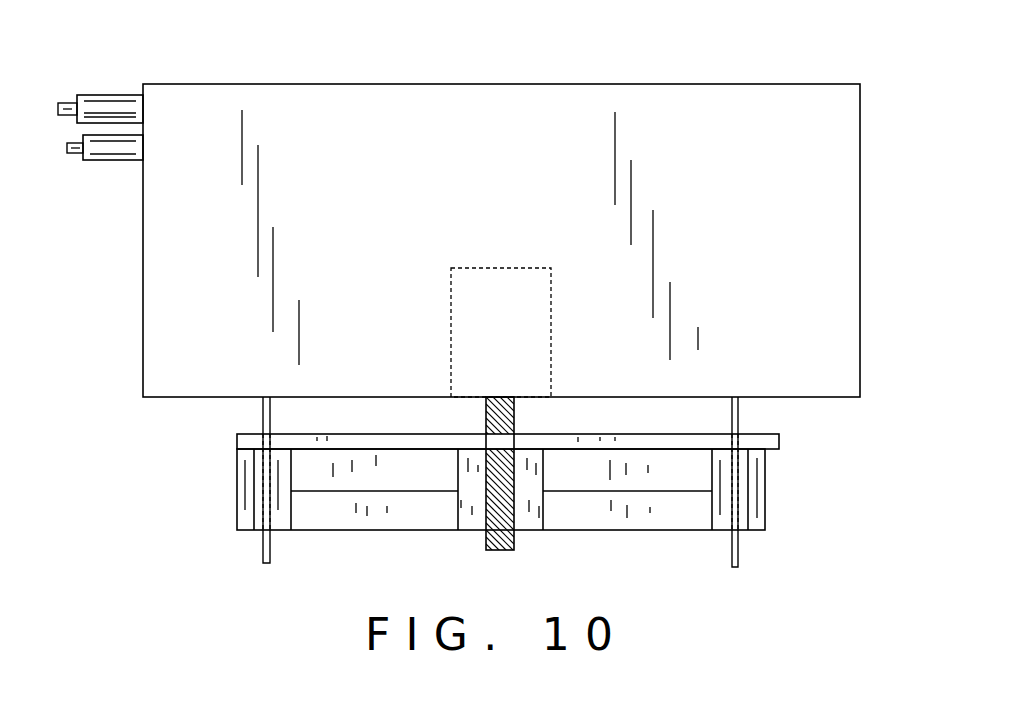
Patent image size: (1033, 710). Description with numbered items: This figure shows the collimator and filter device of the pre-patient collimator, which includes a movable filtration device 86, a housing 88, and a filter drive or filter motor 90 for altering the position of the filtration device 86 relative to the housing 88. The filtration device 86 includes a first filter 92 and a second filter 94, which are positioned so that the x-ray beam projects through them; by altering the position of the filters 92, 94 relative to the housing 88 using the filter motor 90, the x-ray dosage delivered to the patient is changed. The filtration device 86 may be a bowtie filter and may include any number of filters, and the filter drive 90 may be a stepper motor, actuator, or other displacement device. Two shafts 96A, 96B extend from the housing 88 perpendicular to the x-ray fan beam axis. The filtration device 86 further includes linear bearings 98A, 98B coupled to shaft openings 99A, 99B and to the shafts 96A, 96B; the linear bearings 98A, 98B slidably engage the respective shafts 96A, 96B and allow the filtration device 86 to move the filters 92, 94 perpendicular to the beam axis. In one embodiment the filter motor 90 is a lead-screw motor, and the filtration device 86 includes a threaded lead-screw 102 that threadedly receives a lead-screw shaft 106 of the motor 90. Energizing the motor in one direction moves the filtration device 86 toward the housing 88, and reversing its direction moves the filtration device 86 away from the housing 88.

The movable filtration device 86 is at (385, 531).
The housing 88 is at (861, 115).
The filter motor 90 is at (527, 332).
The first filter 92 is at (580, 468).
The second filter 94 is at (676, 508).
The shaft 96A is at (262, 555).
The shaft 96B is at (741, 552).
The linear bearing 98A is at (245, 485).
The linear bearing 98B is at (757, 483).
The shaft opening 99A is at (262, 530).
The shaft opening 99B is at (739, 532).
The threaded lead-screw 102 is at (514, 434).
The lead-screw shaft 106 is at (486, 533).